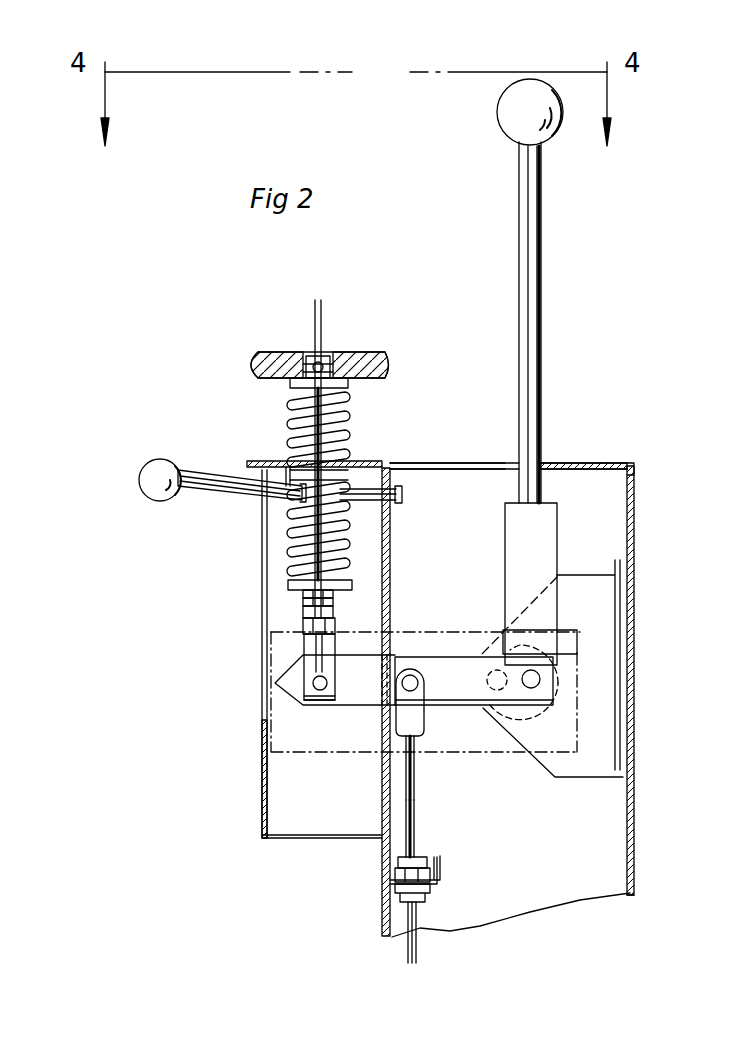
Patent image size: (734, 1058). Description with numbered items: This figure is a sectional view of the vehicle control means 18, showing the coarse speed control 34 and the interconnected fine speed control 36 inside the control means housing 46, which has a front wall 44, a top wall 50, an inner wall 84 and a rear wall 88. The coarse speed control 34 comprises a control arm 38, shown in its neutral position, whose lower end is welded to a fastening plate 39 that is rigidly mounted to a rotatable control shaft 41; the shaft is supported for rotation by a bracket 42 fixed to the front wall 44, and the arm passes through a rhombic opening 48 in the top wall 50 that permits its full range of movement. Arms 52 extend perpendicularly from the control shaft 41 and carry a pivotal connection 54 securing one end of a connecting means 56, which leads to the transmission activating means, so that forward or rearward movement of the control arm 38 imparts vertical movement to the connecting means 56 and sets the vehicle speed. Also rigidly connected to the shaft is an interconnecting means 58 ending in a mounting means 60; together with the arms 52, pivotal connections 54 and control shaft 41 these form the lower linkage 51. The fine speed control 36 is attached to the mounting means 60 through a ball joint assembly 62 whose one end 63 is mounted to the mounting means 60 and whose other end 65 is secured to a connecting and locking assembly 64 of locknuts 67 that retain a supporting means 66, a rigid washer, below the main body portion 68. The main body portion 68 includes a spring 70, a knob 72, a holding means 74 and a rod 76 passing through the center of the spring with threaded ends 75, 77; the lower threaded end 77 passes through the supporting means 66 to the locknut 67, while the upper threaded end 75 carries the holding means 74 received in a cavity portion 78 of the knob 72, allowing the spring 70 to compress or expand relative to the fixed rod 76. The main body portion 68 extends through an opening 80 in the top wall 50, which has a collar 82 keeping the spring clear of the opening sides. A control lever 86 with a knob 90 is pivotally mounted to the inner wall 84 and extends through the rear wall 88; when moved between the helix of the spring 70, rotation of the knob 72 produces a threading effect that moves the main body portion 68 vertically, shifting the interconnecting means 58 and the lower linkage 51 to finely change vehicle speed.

The vehicle control means 18 is at (578, 314).
The coarse speed control 34 is at (565, 438).
The fine speed control 36 is at (212, 382).
The control arm 38 is at (549, 198).
The fastening plate 39 is at (557, 530).
The rotatable control shaft 41 is at (550, 653).
The bracket 42 is at (553, 772).
The front wall 44 is at (637, 652).
The control means housing 46 is at (664, 565).
The opening 48 is at (597, 463).
The top wall 50 is at (634, 466).
The lower linkage 51 is at (576, 696).
The arms 52 is at (415, 762).
The pivotal connection 54 is at (420, 684).
The connecting means 56 is at (415, 808).
The interconnecting means 58 is at (330, 704).
The mounting means 60 is at (318, 690).
The ball joint assembly 62 is at (368, 641).
The end 63 is at (335, 698).
The connecting and locking assembly 64 is at (333, 598).
The end 65 is at (303, 628).
The supporting means 66 is at (352, 586).
The locknuts 67 is at (303, 600).
The main body portion 68 is at (255, 531).
The spring 70 is at (292, 402).
The knob 72 is at (389, 368).
The holding means 74 is at (306, 356).
The threaded end 75 is at (318, 350).
The rod 76 is at (343, 470).
The threaded end 77 is at (386, 631).
The cavity portion 78 is at (330, 352).
The opening 80 is at (287, 466).
The collar 82 is at (402, 493).
The inner wall 84 is at (391, 556).
The control lever 86 is at (226, 477).
The rear wall 88 is at (262, 578).
The knob 90 is at (158, 459).